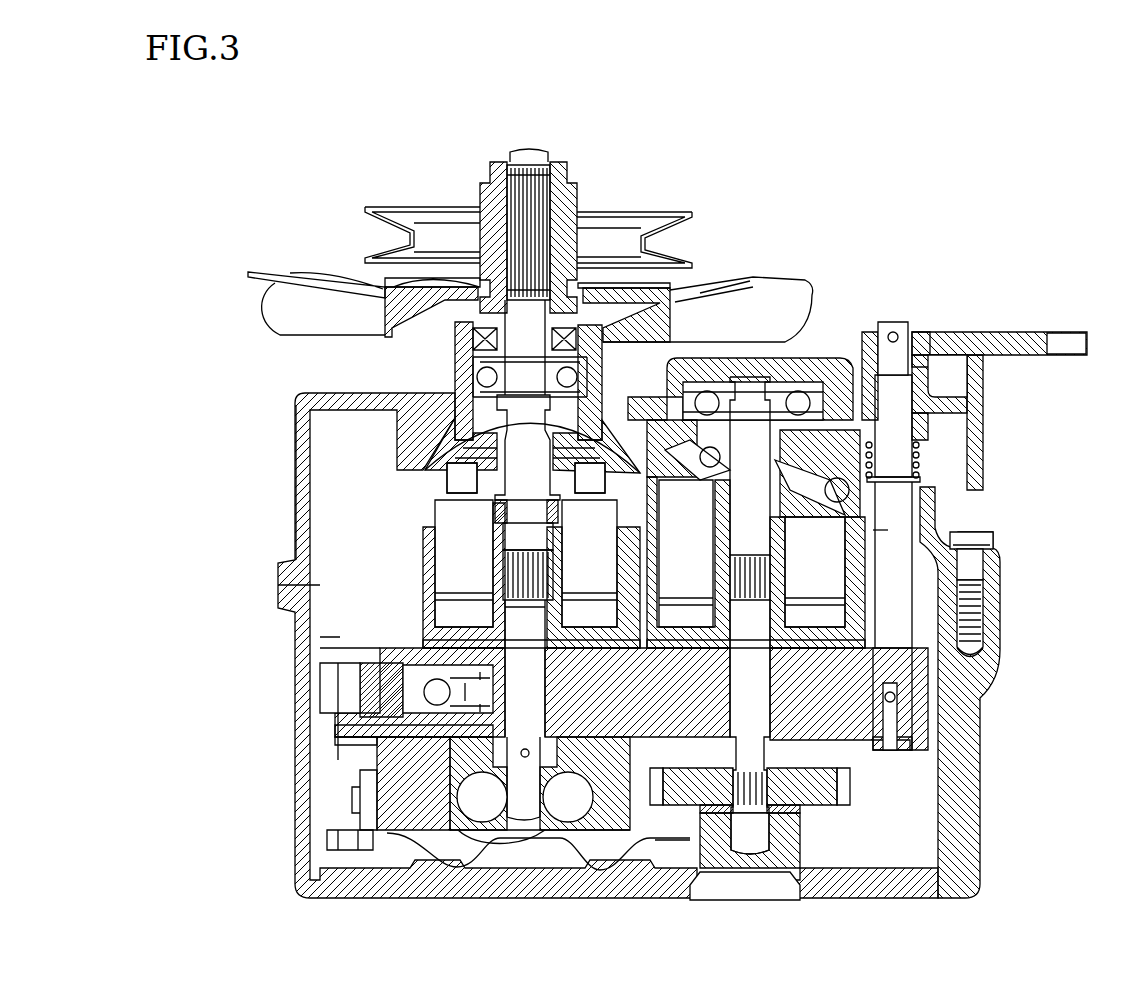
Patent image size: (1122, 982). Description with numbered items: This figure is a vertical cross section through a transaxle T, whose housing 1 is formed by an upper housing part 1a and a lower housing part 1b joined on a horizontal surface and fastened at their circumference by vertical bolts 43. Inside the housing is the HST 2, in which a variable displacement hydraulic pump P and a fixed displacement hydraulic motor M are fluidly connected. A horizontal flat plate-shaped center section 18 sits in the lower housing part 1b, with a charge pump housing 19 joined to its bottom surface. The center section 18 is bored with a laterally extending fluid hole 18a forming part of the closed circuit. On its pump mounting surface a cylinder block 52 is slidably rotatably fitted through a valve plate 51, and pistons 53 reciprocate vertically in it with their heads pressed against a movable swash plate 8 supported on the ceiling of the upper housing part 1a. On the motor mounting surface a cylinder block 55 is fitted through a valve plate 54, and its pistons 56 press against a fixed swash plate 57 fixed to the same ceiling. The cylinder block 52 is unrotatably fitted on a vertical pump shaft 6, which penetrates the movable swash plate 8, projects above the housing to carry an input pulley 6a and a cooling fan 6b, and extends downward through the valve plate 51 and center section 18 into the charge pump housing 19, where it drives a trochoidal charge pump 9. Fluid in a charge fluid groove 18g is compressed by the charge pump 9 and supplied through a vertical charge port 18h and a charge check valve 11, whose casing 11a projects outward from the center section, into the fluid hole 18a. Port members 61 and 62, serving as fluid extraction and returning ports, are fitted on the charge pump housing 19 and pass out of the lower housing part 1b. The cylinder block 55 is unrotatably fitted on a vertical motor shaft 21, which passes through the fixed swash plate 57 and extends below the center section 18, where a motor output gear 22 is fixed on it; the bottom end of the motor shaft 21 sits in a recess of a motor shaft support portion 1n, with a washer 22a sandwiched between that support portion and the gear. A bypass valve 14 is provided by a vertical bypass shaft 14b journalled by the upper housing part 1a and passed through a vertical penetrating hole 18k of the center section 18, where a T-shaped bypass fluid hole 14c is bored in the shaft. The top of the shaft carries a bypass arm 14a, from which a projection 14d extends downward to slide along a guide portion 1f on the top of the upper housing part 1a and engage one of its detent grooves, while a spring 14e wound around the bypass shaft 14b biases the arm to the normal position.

The housing 1 is at (259, 493).
The upper housing part 1a is at (296, 431).
The lower housing part 1b is at (278, 590).
The guide portion 1f is at (984, 383).
The motor shaft support portion 1n is at (790, 845).
The HST 2 is at (650, 488).
The pump shaft 6 is at (530, 458).
The input pulley 6a is at (426, 205).
The cooling fan 6b is at (270, 270).
The movable swash plate 8 is at (928, 495).
The charge pump 9 is at (620, 760).
The charge check valve 11 is at (330, 692).
The casing 11a is at (330, 706).
The bypass valve 14 is at (946, 290).
The bypass arm 14a is at (1028, 340).
The bypass shaft 14b is at (900, 416).
The bypass fluid hole 14c is at (940, 757).
The projection 14d is at (984, 357).
The spring 14e is at (917, 453).
The center section 18 is at (940, 680).
The fluid hole 18a is at (295, 637).
The charge fluid groove 18g is at (362, 733).
The charge port 18h is at (400, 730).
The vertical penetrating hole 18k is at (932, 720).
The charge pump housing 19 is at (408, 764).
The motor shaft 21 is at (760, 513).
The motor output gear 22 is at (848, 788).
The washer 22a is at (798, 810).
The vertical bolt 43 is at (978, 565).
The valve plate 51 is at (980, 652).
The cylinder block 52 is at (923, 595).
The piston 53 is at (820, 580).
The valve plate 54 is at (432, 648).
The cylinder block 55 is at (428, 568).
The piston 56 is at (596, 575).
The fixed swash plate 57 is at (432, 478).
The port member 61 is at (635, 838).
The port member 62 is at (371, 857).
The hydraulic motor M is at (403, 524).
The hydraulic pump P is at (876, 530).
The transaxle T is at (218, 317).